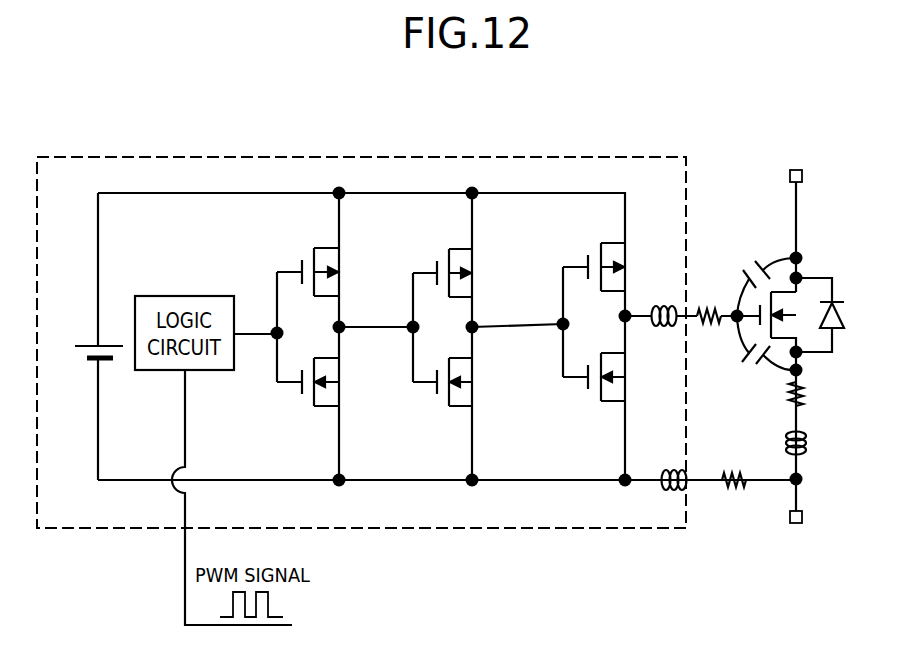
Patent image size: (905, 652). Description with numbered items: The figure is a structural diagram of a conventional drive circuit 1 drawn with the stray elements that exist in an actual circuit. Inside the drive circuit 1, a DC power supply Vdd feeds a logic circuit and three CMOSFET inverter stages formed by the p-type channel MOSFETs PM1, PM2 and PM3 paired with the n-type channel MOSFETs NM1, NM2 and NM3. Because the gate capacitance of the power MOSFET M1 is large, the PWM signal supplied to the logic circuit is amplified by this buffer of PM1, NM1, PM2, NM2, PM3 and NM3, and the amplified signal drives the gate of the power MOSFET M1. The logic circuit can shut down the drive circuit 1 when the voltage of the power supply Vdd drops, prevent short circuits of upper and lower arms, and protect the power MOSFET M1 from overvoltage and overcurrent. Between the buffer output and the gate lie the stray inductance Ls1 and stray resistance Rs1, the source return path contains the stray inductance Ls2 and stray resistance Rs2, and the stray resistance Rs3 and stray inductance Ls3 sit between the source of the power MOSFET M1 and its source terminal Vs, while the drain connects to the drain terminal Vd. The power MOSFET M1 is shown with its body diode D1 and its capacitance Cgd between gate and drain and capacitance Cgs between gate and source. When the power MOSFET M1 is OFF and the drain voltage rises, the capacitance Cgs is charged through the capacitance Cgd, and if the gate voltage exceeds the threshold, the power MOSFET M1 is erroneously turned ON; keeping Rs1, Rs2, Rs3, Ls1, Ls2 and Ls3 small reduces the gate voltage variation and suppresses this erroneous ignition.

The drive circuit 1 is at (89, 157).
The DC power supply Vdd is at (86, 338).
The p-type channel MOSFET PM1 is at (337, 272).
The n-type channel MOSFET NM1 is at (337, 382).
The p-type channel MOSFET PM2 is at (474, 273).
The n-type channel MOSFET NM2 is at (475, 382).
The p-type channel MOSFET PM3 is at (621, 267).
The n-type channel MOSFET NM3 is at (621, 377).
The stray inductance Ls1 is at (663, 330).
The stray resistance Rs1 is at (716, 332).
The stray inductance Ls2 is at (663, 495).
The stray resistance Rs2 is at (736, 496).
The stray resistance Rs3 is at (824, 393).
The stray inductance Ls3 is at (822, 443).
The gate-drain capacitance Cgd is at (758, 276).
The gate-source capacitance Cgs is at (762, 354).
The power MOSFET M1 is at (790, 307).
The body diode D1 is at (840, 328).
The drain terminal Vd is at (798, 215).
The source terminal Vs is at (797, 519).